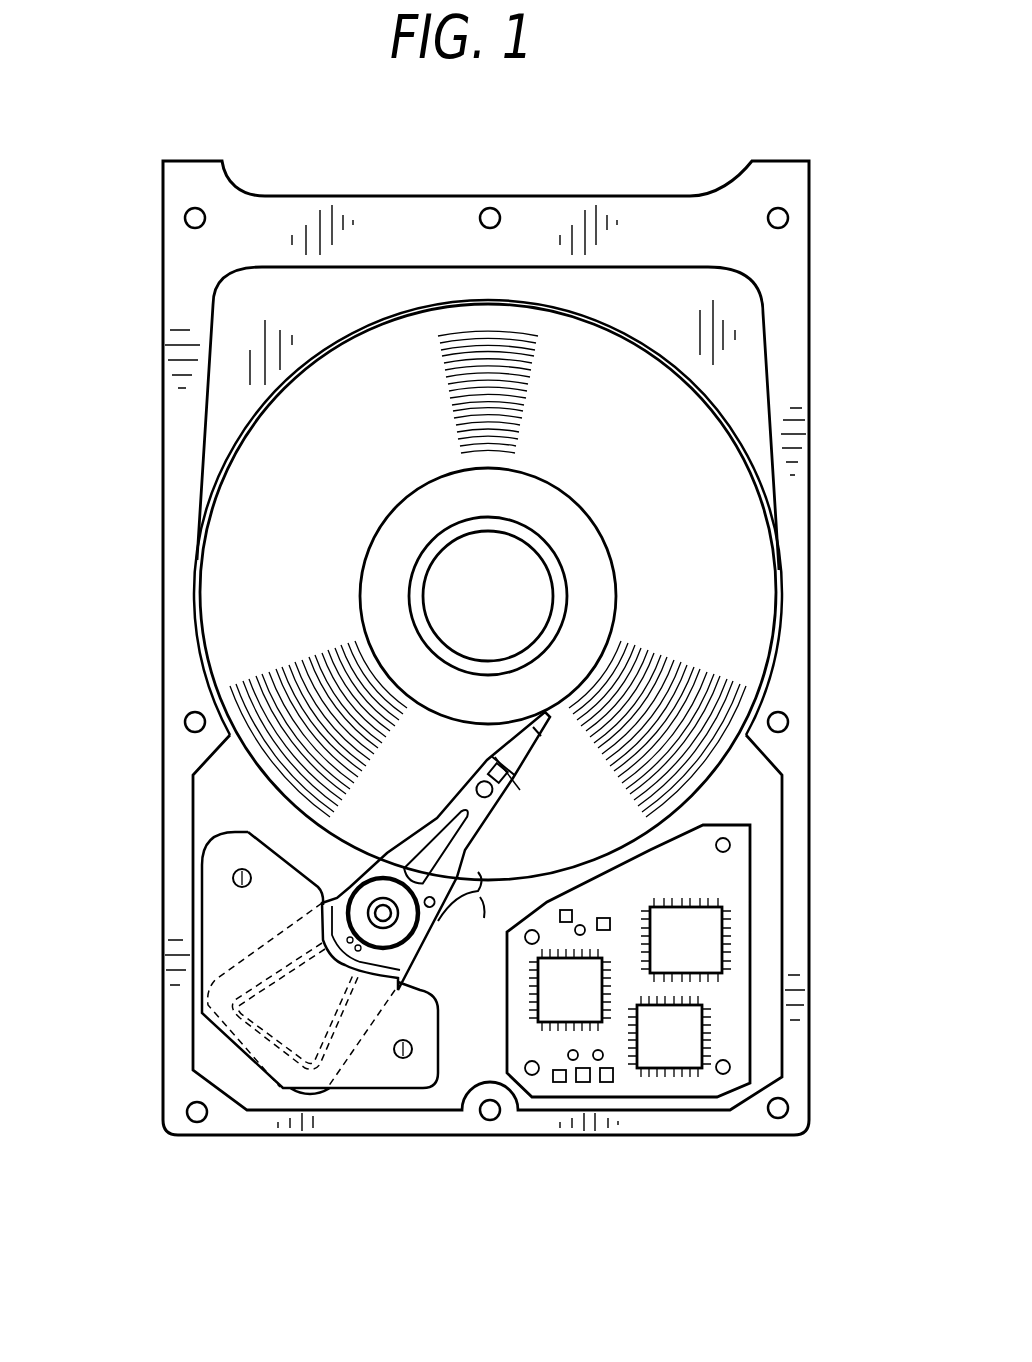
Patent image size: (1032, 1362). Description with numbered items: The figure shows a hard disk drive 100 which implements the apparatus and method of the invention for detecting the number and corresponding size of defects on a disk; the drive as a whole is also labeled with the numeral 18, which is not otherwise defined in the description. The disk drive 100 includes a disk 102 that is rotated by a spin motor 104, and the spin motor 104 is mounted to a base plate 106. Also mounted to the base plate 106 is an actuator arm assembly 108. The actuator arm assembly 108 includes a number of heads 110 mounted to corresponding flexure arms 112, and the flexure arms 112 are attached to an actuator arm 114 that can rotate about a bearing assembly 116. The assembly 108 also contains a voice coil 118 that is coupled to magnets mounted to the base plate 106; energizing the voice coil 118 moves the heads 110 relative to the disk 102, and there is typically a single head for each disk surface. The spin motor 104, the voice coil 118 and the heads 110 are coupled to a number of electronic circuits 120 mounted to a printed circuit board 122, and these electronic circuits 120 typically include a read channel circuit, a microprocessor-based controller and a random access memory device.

The disk drive 18 is at (786, 108).
The hard disk drive 100 is at (700, 405).
The disk 102 is at (665, 458).
The spin motor 104 is at (590, 553).
The base plate 106 is at (240, 315).
The actuator arm assembly 108 is at (464, 852).
The heads 110 is at (538, 728).
The flexure arms 112 is at (490, 745).
The actuator arm 114 is at (437, 818).
The bearing assembly 116 is at (413, 918).
The voice coil 118 is at (320, 1037).
The electronic circuits 120 is at (705, 939).
The printed circuit board 122 is at (733, 868).